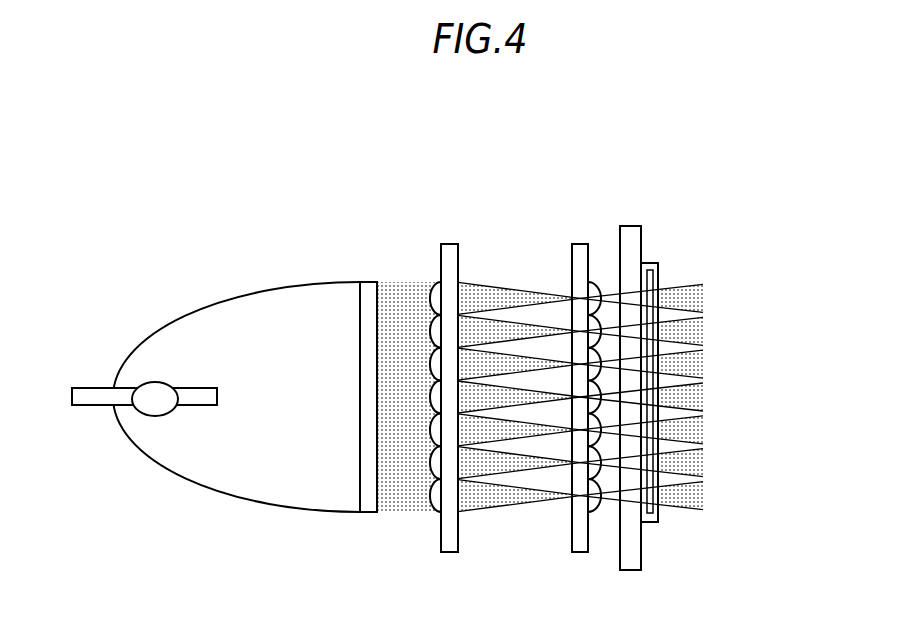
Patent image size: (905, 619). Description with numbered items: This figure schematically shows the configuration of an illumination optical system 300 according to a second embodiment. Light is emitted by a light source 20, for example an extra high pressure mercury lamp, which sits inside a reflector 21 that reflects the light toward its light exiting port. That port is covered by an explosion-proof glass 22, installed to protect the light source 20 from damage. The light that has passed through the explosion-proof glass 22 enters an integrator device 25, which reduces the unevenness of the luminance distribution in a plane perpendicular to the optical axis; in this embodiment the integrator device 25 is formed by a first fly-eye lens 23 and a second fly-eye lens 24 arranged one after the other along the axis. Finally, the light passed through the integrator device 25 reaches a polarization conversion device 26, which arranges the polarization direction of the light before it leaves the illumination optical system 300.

The light source 20 is at (153, 381).
The reflector 21 is at (275, 288).
The explosion-proof glass 22 is at (365, 282).
The first fly-eye lens 23 is at (447, 244).
The second fly-eye lens 24 is at (580, 243).
The integrator device 25 is at (438, 177).
The polarization conversion device 26 is at (628, 226).
The illumination optical system 300 is at (745, 93).